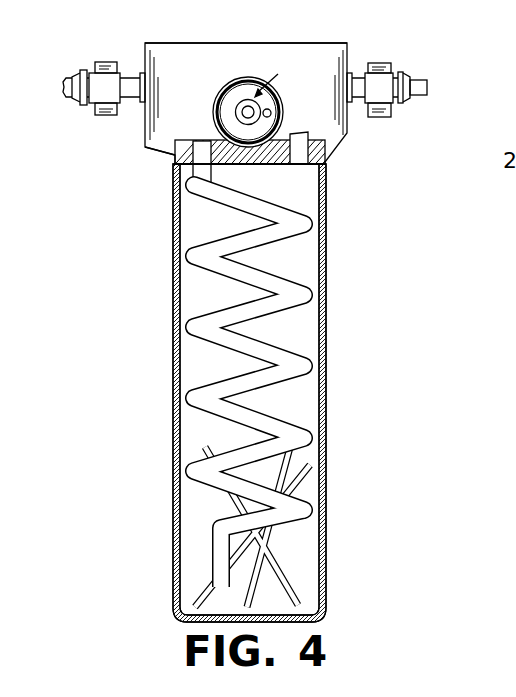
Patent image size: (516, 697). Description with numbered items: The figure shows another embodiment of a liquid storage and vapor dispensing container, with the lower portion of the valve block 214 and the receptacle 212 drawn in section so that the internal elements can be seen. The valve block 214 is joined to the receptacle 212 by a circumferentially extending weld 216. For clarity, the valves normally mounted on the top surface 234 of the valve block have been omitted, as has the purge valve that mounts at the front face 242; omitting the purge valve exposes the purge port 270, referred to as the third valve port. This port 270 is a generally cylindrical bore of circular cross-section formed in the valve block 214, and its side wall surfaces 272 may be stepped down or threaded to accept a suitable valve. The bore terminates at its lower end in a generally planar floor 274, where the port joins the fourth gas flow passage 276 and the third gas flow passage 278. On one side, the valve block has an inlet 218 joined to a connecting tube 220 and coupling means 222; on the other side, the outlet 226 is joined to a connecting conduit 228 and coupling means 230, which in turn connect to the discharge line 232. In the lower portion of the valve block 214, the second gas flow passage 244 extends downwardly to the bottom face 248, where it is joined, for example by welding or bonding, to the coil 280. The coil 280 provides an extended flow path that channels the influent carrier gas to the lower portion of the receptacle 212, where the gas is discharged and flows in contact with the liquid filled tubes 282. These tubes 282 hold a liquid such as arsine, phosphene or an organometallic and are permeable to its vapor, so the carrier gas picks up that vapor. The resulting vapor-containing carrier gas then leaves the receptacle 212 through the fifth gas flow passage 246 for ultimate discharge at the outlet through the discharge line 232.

The receptacle 212 is at (322, 332).
The valve block 214 is at (302, 57).
The circumferentially extending weld 216 is at (172, 155).
The inlet 218 is at (141, 73).
The connecting tube 220 is at (128, 102).
The coupling means 222 is at (92, 116).
The outlet 226 is at (352, 82).
The connecting conduit 228 is at (358, 98).
The coupling means 230 is at (383, 78).
The discharge line 232 is at (426, 87).
The top surface of the valve block 234 is at (267, 23).
The front face of the valve block 242 is at (213, 81).
The second gas flow passage 244 is at (192, 170).
The fifth gas flow passage 246 is at (310, 165).
The bottom face of the valve block 248 is at (232, 164).
The purge port 270 is at (277, 97).
The side wall surfaces 272 is at (216, 104).
The floor 274 is at (267, 76).
The fourth gas flow passage 276 is at (242, 113).
The third gas flow passage 278 is at (271, 113).
The coil 280 is at (258, 238).
The liquid filled tubes 282 is at (314, 470).